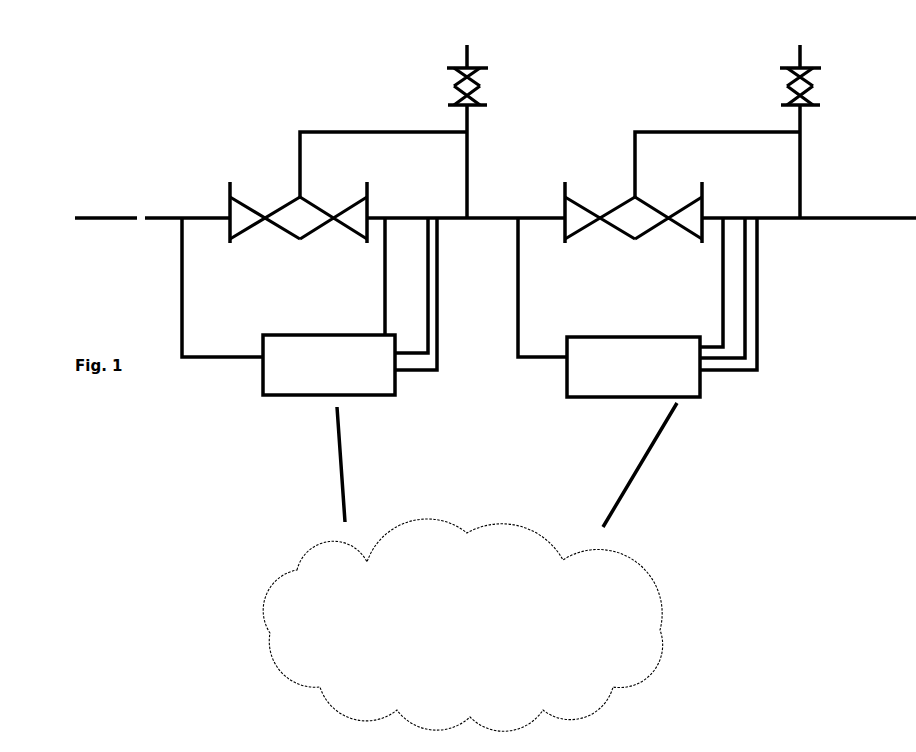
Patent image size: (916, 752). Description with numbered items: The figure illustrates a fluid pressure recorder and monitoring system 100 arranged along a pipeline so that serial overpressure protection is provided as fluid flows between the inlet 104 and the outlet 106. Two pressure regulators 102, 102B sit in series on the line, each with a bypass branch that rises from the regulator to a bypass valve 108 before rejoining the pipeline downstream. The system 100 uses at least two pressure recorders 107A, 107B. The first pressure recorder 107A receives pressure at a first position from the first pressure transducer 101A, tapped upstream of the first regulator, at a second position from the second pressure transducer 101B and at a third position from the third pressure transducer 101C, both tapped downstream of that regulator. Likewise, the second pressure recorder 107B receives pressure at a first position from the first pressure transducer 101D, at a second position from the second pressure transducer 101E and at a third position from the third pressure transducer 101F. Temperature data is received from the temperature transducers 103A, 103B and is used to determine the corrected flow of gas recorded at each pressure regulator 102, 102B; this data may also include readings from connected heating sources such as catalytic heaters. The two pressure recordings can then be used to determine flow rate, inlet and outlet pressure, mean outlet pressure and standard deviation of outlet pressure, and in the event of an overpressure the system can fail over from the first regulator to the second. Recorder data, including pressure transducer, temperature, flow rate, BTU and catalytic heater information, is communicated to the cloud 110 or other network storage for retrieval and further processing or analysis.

The system 100 is at (598, 67).
The first pressure transducer 101A is at (175, 300).
The second pressure transducer 101B is at (426, 257).
The third pressure transducer 101C is at (414, 377).
The first pressure transducer 101D is at (515, 335).
The second pressure transducer 101E is at (742, 252).
The third pressure transducer 101F is at (758, 340).
The pressure regulator 102 is at (294, 238).
The pressure regulator 102B is at (623, 237).
The temperature transducer 103A is at (381, 257).
The temperature transducer 103B is at (718, 263).
The pipeline inlet 104 is at (163, 213).
The pipeline outlet 106 is at (903, 213).
The first pressure recorder 107A is at (333, 405).
The second pressure recorder 107B is at (641, 402).
The bypass valve 108 is at (457, 66).
The cloud 110 is at (470, 567).